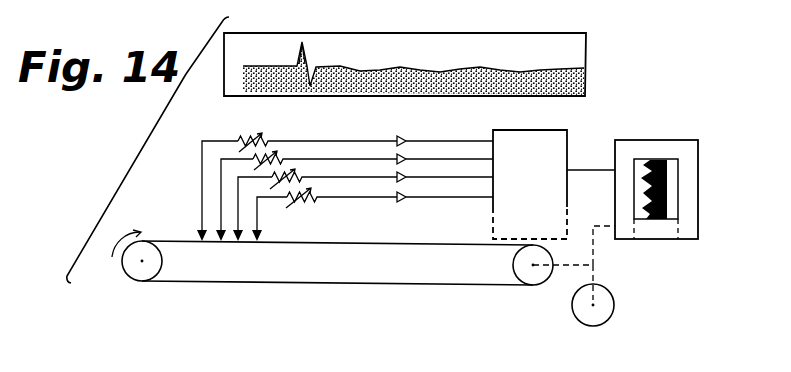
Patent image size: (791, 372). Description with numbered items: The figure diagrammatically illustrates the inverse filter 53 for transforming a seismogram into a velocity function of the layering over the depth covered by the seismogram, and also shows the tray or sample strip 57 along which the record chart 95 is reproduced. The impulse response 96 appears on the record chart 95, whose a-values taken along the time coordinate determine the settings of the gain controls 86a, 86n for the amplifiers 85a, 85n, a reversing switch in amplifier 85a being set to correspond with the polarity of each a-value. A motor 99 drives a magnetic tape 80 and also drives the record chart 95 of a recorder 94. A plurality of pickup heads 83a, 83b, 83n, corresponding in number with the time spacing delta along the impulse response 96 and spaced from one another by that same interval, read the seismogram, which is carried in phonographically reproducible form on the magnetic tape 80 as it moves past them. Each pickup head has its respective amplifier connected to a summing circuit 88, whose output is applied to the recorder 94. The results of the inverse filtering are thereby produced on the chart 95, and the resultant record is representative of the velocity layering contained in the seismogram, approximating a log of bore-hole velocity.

The inverse filter 53 is at (379, 319).
The ore tray 57 is at (299, 77).
The magnetic tape 80 is at (460, 244).
The pickup head 83a is at (203, 219).
The pickup head 83b is at (222, 173).
The pickup head 83n is at (258, 236).
The amplifier 85a is at (404, 139).
The amplifier 85n is at (405, 199).
The gain control 86a is at (266, 137).
The gain control 86n is at (313, 197).
The summing circuit 88 is at (543, 137).
The recorder 94 is at (673, 131).
The record chart 95 is at (502, 48).
The impulse response 96 is at (307, 56).
The motor 99 is at (606, 311).